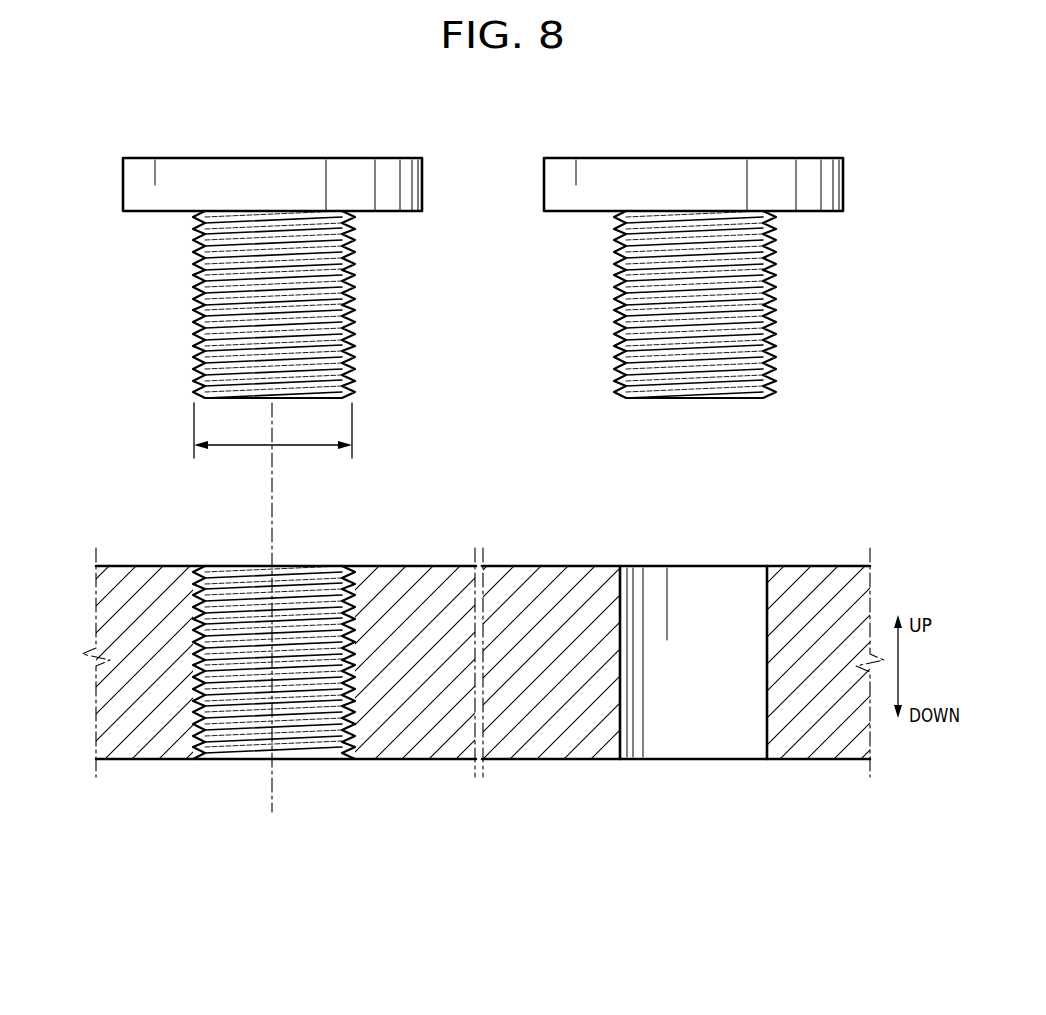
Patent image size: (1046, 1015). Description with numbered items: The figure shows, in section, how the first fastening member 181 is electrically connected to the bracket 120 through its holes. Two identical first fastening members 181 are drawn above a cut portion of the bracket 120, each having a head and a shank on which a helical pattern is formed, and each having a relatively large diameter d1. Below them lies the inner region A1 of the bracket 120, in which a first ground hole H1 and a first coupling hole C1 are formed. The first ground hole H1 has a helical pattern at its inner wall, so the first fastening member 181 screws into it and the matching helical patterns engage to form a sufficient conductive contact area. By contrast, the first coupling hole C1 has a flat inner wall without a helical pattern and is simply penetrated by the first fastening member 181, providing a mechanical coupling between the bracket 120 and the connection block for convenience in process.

The first fastening member 181 is at (150, 274).
The bracket 120 is at (466, 656).
The inner region A1 is at (403, 580).
The first ground hole H1 is at (234, 760).
The first coupling hole C1 is at (670, 760).
The diameter d1 is at (273, 440).